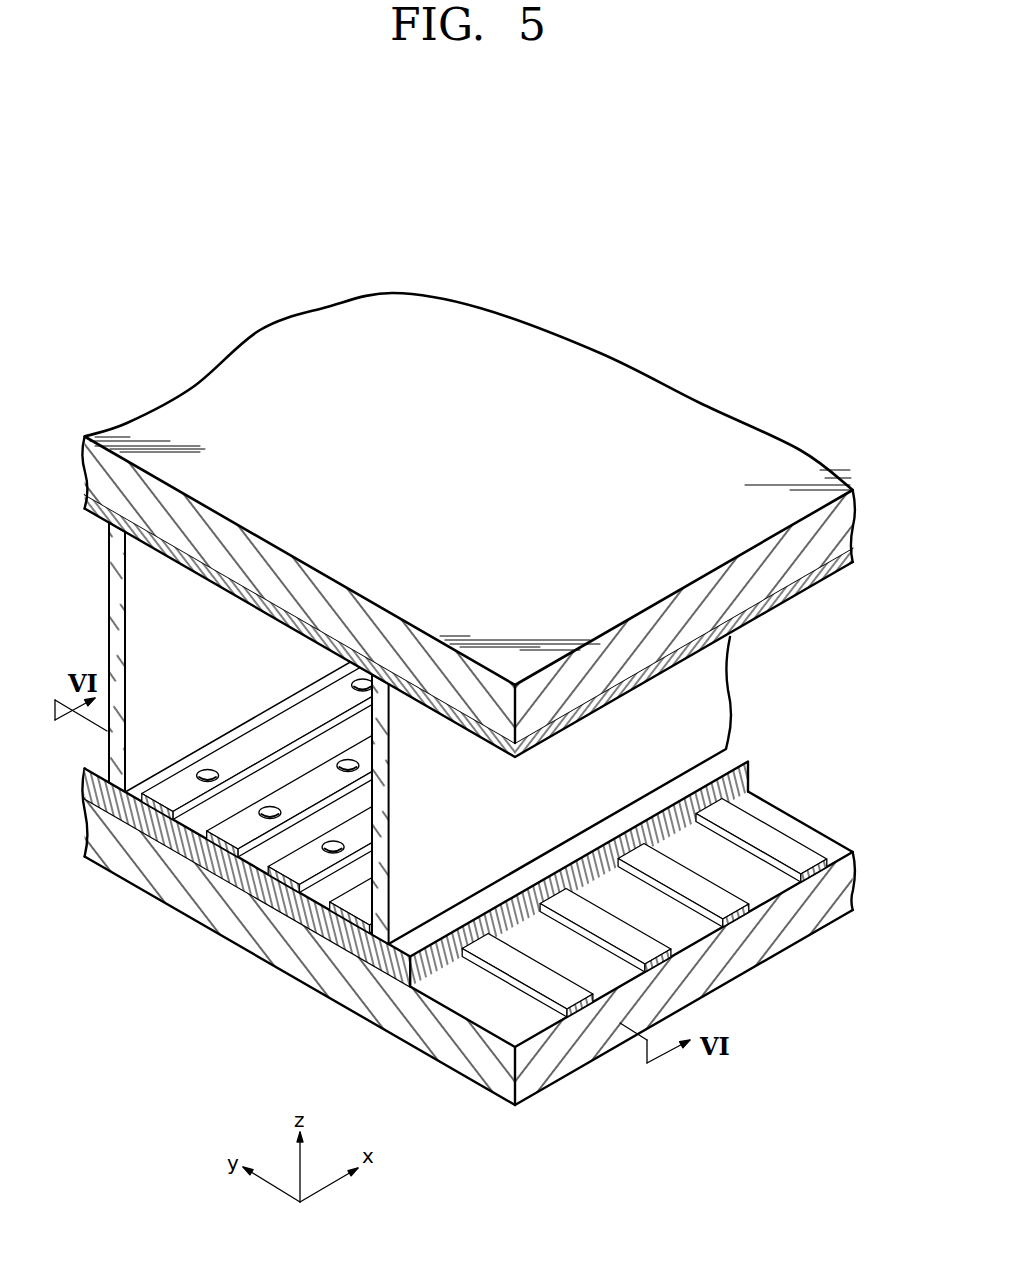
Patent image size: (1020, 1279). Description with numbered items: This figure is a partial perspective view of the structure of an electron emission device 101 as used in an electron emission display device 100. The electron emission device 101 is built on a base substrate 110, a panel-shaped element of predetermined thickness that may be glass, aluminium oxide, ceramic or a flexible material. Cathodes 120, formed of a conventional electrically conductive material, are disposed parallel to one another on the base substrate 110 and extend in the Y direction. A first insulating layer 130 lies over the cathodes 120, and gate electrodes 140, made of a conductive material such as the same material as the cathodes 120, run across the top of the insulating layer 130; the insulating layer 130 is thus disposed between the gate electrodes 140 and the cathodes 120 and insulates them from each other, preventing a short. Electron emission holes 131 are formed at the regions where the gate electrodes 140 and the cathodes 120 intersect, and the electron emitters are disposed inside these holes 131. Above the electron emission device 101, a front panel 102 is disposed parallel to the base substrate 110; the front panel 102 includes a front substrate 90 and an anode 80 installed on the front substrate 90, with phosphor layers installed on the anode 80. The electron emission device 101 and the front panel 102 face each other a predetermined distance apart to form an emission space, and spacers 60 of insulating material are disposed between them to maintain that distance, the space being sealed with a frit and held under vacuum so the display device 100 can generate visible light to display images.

The spacer 60 is at (720, 667).
The anode 80 is at (800, 588).
The front substrate 90 is at (812, 556).
The electron emission display device 100 is at (485, 699).
The electron emission device 101 is at (468, 852).
The front panel 102 is at (481, 525).
The base substrate 110 is at (422, 1020).
The cathodes 120 is at (752, 1003).
The first insulating layer 130 is at (368, 962).
The electron emission holes 131 is at (268, 806).
The gate electrodes 140 is at (337, 903).